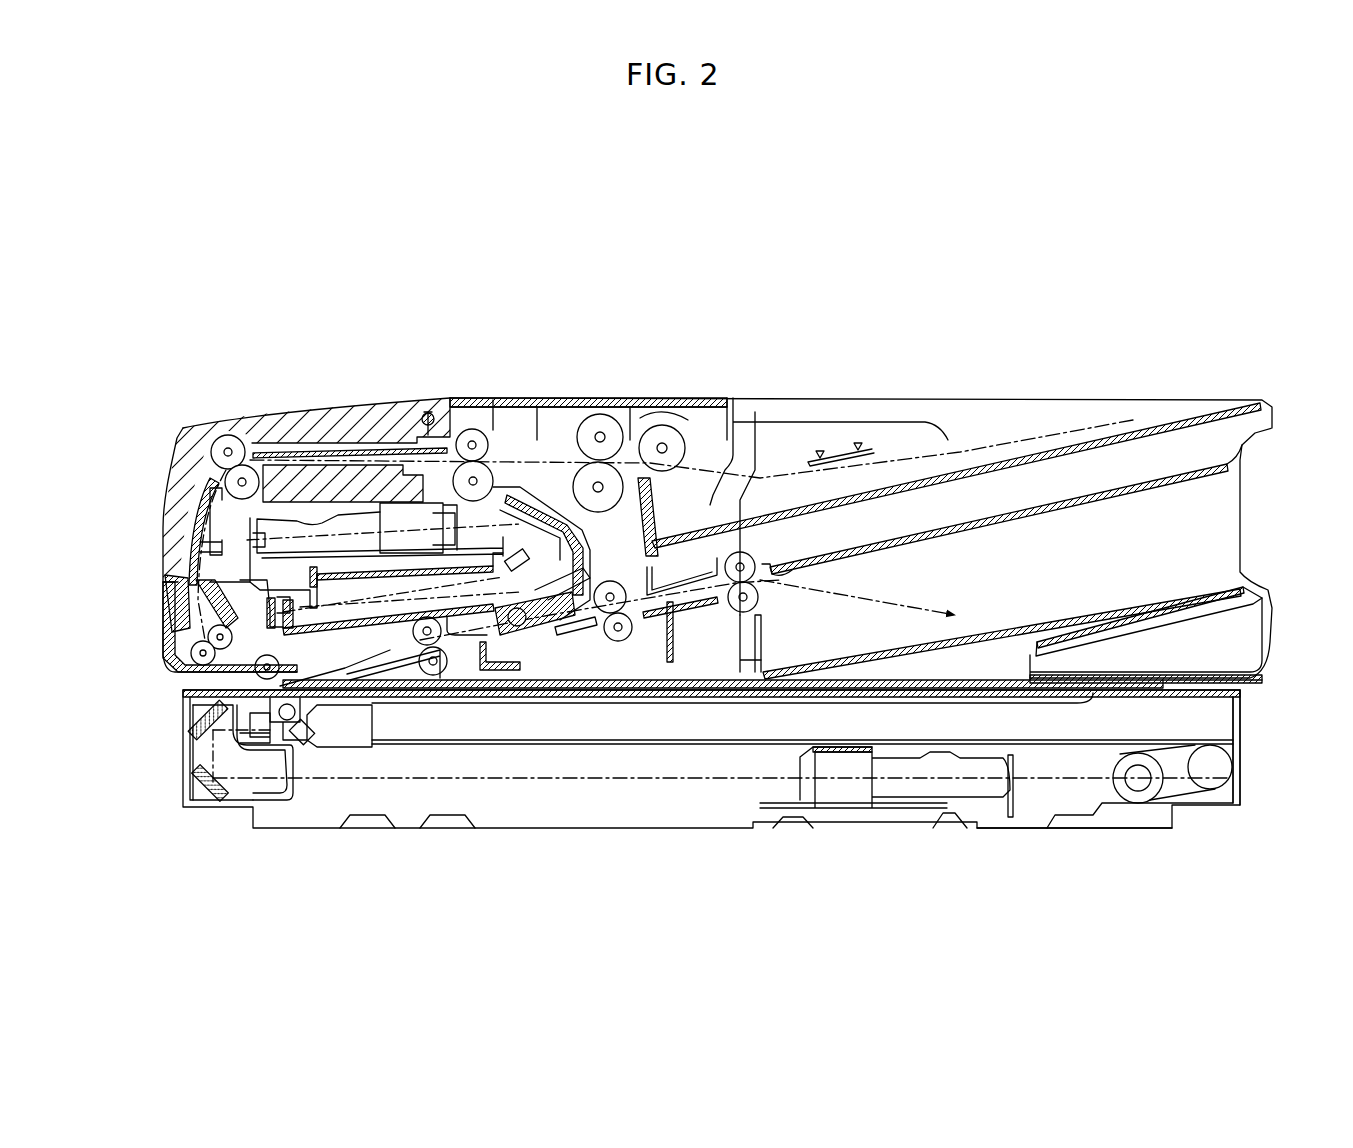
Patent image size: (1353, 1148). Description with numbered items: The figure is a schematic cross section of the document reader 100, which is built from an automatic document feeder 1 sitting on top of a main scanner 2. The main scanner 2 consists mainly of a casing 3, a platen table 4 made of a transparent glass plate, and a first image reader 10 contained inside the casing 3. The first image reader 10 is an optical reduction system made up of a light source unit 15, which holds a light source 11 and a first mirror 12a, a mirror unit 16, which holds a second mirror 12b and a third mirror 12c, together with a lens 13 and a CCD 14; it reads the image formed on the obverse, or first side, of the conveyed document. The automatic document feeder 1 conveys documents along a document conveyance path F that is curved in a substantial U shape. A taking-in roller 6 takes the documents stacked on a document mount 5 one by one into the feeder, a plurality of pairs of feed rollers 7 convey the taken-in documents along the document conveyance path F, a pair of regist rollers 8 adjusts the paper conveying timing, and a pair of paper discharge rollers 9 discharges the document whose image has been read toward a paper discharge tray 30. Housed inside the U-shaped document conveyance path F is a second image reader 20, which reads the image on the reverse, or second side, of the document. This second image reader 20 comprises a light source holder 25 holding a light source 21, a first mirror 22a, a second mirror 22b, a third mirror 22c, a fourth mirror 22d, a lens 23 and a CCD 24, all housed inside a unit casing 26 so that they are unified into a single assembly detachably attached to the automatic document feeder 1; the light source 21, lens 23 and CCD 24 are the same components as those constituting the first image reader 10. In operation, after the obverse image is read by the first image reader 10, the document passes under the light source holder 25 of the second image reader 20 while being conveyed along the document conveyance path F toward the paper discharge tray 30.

The document reader 100 is at (1078, 292).
The automatic document feeder 1 is at (867, 368).
The main scanner 2 is at (1200, 830).
The casing 3 is at (1240, 718).
The platen table 4 is at (676, 645).
The document mount 5 is at (1145, 428).
The taking-in roller 6 is at (665, 426).
The feed rollers 7 is at (215, 438).
The regist rollers 8 is at (191, 648).
The paper discharge rollers 9 is at (745, 552).
The first image reader 10 is at (967, 814).
The light source 11 is at (262, 748).
The first mirror 12a is at (305, 742).
The second mirror 12b is at (203, 730).
The third mirror 12c is at (185, 812).
The lens 13 is at (838, 792).
The CCD 14 is at (1012, 780).
The light source unit 15 is at (302, 760).
The mirror unit 16 is at (208, 752).
The second image reader 20 is at (322, 495).
The light source 21 is at (512, 632).
The first mirror 22a is at (462, 692).
The second mirror 22b is at (207, 583).
The third mirror 22c is at (650, 640).
The fourth mirror 22d is at (500, 560).
The lens 23 is at (408, 512).
The CCD 24 is at (200, 522).
The light source holder 25 is at (535, 650).
The unit casing 26 is at (527, 545).
The paper discharge tray 30 is at (1150, 595).
The document conveyance path F is at (935, 458).